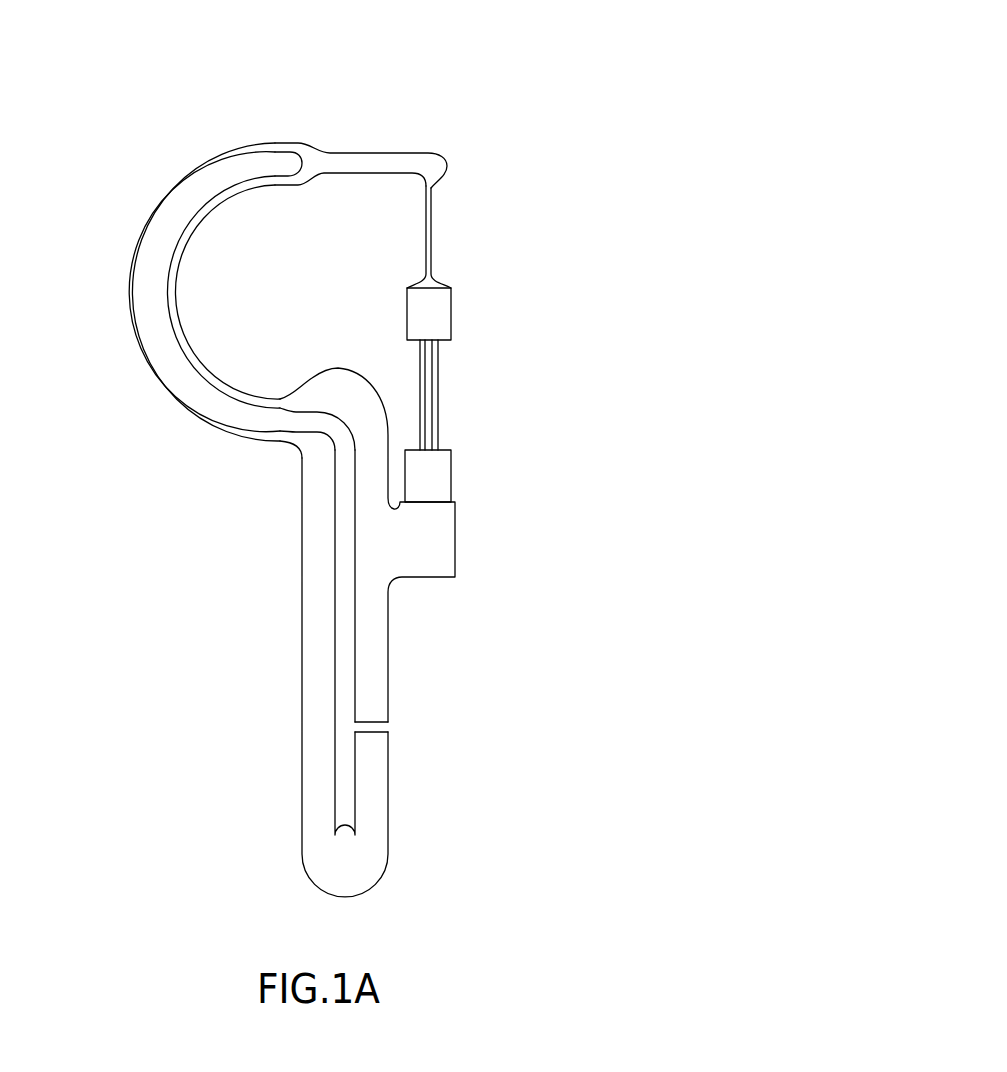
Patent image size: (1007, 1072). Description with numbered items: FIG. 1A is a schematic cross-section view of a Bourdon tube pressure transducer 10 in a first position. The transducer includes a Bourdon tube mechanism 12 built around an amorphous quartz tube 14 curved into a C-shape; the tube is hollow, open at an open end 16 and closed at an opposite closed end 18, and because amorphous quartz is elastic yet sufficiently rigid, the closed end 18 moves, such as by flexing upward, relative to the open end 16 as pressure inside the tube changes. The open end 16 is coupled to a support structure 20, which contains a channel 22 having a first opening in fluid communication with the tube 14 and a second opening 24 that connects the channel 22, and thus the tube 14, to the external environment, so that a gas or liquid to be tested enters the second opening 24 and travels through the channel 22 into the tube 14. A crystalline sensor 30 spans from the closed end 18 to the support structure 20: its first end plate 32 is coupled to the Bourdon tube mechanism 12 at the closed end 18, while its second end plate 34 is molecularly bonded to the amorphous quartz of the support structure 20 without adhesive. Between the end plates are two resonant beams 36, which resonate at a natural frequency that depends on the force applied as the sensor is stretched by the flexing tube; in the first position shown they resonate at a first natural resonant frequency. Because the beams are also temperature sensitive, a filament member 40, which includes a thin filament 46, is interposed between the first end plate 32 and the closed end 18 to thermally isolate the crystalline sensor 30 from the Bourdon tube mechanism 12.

The Bourdon tube pressure transducer 10 is at (562, 97).
The Bourdon tube mechanism 12 is at (128, 158).
The amorphous quartz tube 14 is at (130, 293).
The open end 16 is at (273, 441).
The closed end 18 is at (365, 163).
The support structure 20 is at (300, 773).
The channel 22 is at (345, 567).
The second opening 24 is at (395, 727).
The crystalline sensor 30 is at (499, 332).
The first end plate 32 is at (443, 310).
The second end plate 34 is at (430, 482).
The resonant beams 36 is at (437, 387).
The filament member 40 is at (487, 224).
The filament 46 is at (433, 210).